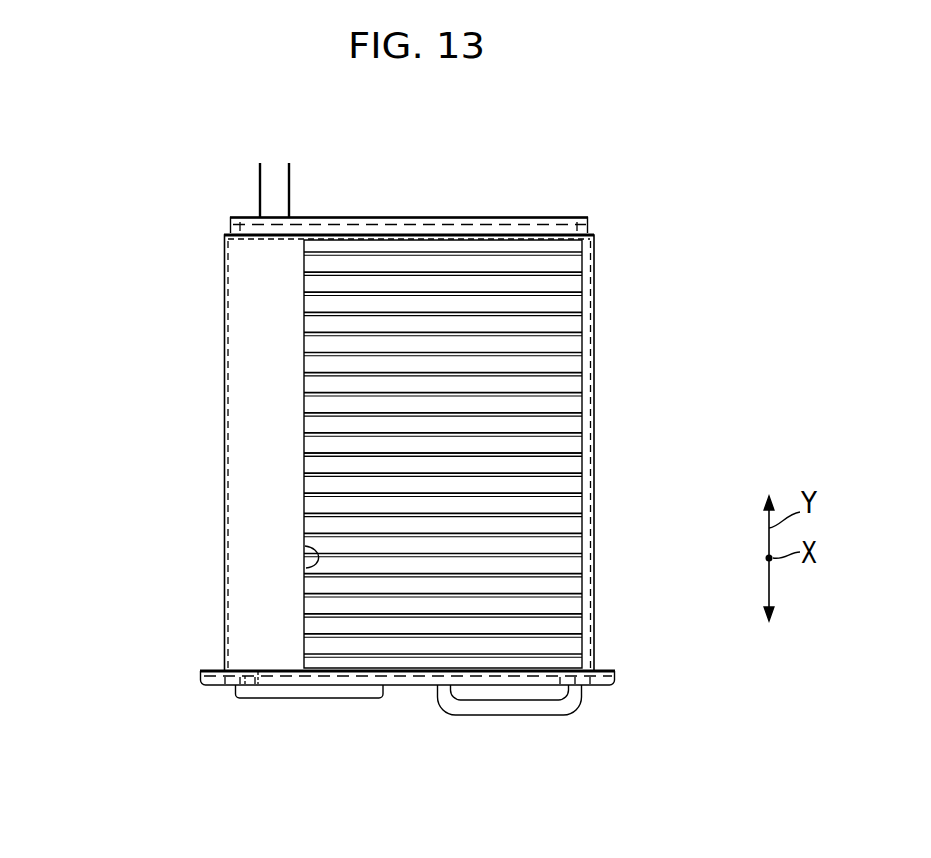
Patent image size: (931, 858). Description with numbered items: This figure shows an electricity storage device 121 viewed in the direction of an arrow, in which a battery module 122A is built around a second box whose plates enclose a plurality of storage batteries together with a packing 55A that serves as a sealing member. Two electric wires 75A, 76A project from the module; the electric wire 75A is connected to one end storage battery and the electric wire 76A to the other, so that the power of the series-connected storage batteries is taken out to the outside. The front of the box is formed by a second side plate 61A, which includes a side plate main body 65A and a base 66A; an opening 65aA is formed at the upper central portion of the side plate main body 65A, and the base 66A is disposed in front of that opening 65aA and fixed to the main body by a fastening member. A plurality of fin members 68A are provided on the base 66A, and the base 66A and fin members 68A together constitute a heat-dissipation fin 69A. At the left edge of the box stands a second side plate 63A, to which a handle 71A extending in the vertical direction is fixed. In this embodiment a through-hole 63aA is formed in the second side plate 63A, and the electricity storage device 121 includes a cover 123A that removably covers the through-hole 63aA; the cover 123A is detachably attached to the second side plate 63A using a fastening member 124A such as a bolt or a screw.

The electricity storage device 121 is at (392, 429).
The battery module 122A is at (614, 220).
The packing 55A is at (581, 216).
The electric wire 75A is at (260, 198).
The electric wire 76A is at (289, 196).
The heat-dissipation fin 69A is at (392, 454).
The second side plate 61A is at (321, 454).
The side plate main body 65A is at (243, 462).
The base 66A is at (310, 502).
The opening 65aA is at (306, 568).
The fin member 68A is at (582, 452).
The second side plate 63A is at (408, 686).
The through-hole 63aA is at (265, 672).
The fastening member 124A is at (250, 680).
The cover 123A is at (323, 698).
The handle 71A is at (565, 706).